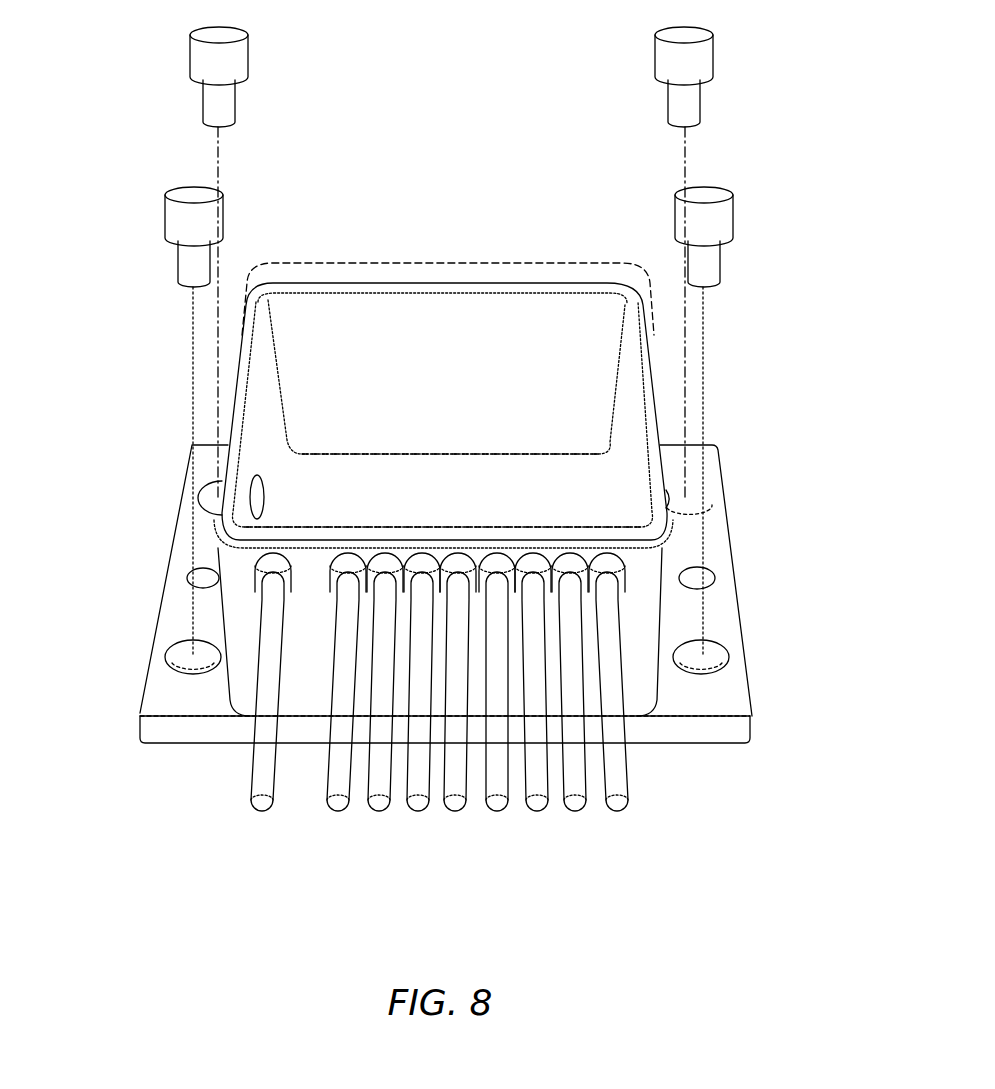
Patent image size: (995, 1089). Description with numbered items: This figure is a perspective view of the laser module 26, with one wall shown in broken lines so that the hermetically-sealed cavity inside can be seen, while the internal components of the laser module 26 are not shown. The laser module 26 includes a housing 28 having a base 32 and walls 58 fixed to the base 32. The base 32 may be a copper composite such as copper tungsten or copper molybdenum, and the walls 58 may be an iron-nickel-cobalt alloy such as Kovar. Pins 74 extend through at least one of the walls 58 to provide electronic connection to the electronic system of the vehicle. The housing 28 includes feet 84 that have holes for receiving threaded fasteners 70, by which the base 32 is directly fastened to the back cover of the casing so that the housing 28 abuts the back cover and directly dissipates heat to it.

The laser module 26 is at (567, 214).
The housing 28 is at (327, 291).
The base 32 is at (452, 480).
The walls 58 is at (420, 265).
The threaded fasteners 70 is at (190, 60).
The terminal pins 74 is at (617, 812).
The feet 84 is at (265, 503).